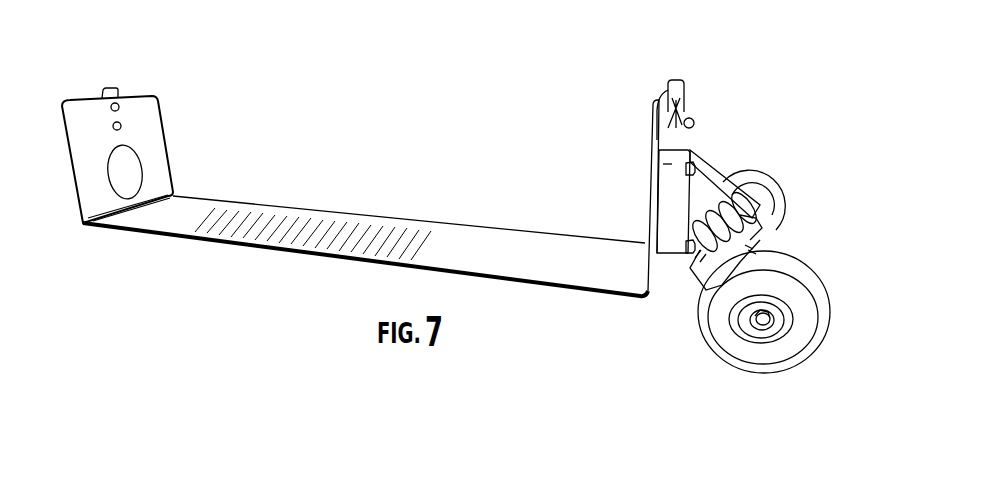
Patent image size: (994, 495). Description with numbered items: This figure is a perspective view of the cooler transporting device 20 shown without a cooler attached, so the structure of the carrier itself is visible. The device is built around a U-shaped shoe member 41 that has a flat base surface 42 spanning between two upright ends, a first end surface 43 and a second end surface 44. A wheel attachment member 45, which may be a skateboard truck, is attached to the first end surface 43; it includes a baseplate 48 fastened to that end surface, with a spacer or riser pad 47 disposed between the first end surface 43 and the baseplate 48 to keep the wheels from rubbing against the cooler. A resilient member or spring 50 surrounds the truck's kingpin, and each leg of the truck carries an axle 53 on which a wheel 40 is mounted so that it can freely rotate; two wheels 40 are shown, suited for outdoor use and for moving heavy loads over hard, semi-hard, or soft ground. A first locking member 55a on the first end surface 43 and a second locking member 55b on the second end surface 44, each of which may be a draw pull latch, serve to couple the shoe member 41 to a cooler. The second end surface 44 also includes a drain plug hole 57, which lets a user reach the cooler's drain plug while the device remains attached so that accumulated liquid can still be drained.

The cooler transporting device 20 is at (593, 82).
The wheel 40 is at (773, 177).
The shoe member 41 is at (210, 245).
The base surface 42 is at (442, 247).
The first end surface 43 is at (660, 143).
The second end surface 44 is at (142, 125).
The wheel attachment member 45 is at (720, 150).
The riser pad 47 is at (672, 255).
The baseplate 48 is at (690, 150).
The spring 50 is at (787, 227).
The axle 53 is at (763, 327).
The first locking member 55a is at (677, 80).
The second locking member 55b is at (110, 89).
The drain plug hole 57 is at (130, 160).